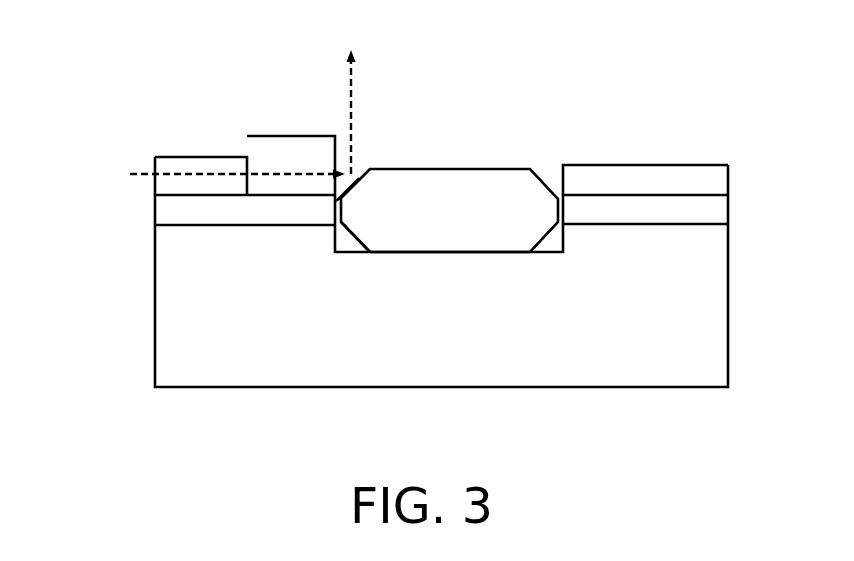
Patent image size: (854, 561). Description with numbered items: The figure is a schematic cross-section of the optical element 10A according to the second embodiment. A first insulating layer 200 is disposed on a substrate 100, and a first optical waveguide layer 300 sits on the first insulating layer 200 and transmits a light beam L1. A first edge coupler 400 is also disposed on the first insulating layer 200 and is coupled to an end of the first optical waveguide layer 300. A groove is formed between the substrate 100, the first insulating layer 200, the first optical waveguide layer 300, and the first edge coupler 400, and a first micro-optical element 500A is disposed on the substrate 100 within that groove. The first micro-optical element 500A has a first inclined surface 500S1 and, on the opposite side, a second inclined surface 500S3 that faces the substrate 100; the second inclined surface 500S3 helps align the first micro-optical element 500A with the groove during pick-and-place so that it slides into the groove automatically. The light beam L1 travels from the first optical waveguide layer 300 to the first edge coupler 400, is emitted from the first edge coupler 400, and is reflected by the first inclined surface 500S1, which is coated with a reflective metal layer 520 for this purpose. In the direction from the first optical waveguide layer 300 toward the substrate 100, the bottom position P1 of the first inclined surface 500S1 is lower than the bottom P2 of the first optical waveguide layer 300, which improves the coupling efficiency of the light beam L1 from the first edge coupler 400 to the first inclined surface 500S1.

The optical element 10A is at (727, 450).
The substrate 100 is at (170, 297).
The first insulating layer 200 is at (170, 208).
The first optical waveguide layer 300 is at (198, 168).
The first edge coupler 400 is at (282, 148).
The first micro-optical element 500A is at (500, 183).
The first inclined surface 500S1 is at (360, 188).
The second inclined surface 500S3 is at (360, 236).
The reflective metal layer 520 is at (352, 176).
The light beam L1 is at (131, 173).
The bottom position of the first inclined surface P1 is at (330, 203).
The bottom of the first optical waveguide layer P2 is at (223, 207).